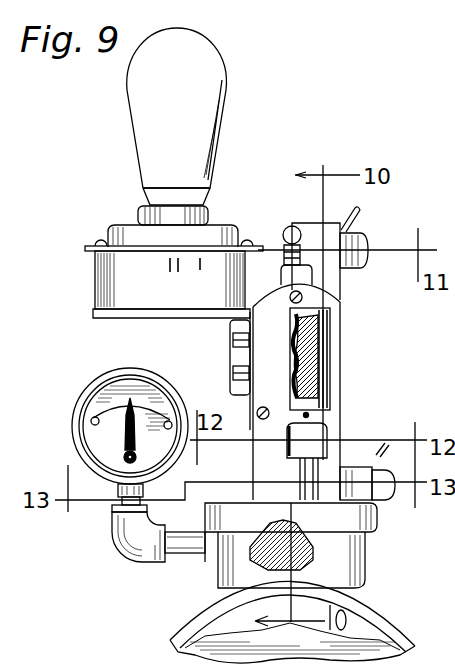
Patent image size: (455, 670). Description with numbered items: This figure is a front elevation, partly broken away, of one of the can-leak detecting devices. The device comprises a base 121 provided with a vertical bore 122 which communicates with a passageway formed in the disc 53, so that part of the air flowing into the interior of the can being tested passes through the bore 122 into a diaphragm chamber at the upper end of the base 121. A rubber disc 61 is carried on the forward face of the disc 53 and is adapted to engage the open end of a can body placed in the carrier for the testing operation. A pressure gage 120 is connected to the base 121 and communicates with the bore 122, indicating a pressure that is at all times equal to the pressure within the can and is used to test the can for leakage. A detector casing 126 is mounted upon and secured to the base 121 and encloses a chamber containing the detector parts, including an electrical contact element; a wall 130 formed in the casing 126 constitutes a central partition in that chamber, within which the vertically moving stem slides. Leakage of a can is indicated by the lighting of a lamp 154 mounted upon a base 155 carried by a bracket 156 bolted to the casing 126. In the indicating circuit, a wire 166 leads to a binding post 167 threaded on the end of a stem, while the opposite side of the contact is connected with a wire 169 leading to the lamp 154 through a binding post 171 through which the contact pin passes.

The lamp 154 is at (177, 116).
The base 155 is at (100, 266).
The bracket 156 is at (158, 318).
The wire 169 is at (362, 218).
The binding post 171 is at (362, 240).
The detector casing 126 is at (341, 323).
The wall 130 is at (326, 410).
The wire 166 is at (357, 462).
The binding post 167 is at (390, 458).
The pressure gage 120 is at (93, 386).
The base 121 is at (342, 528).
The vertical bore 122 is at (352, 566).
The disc 53 is at (212, 612).
The rubber disc 61 is at (222, 623).